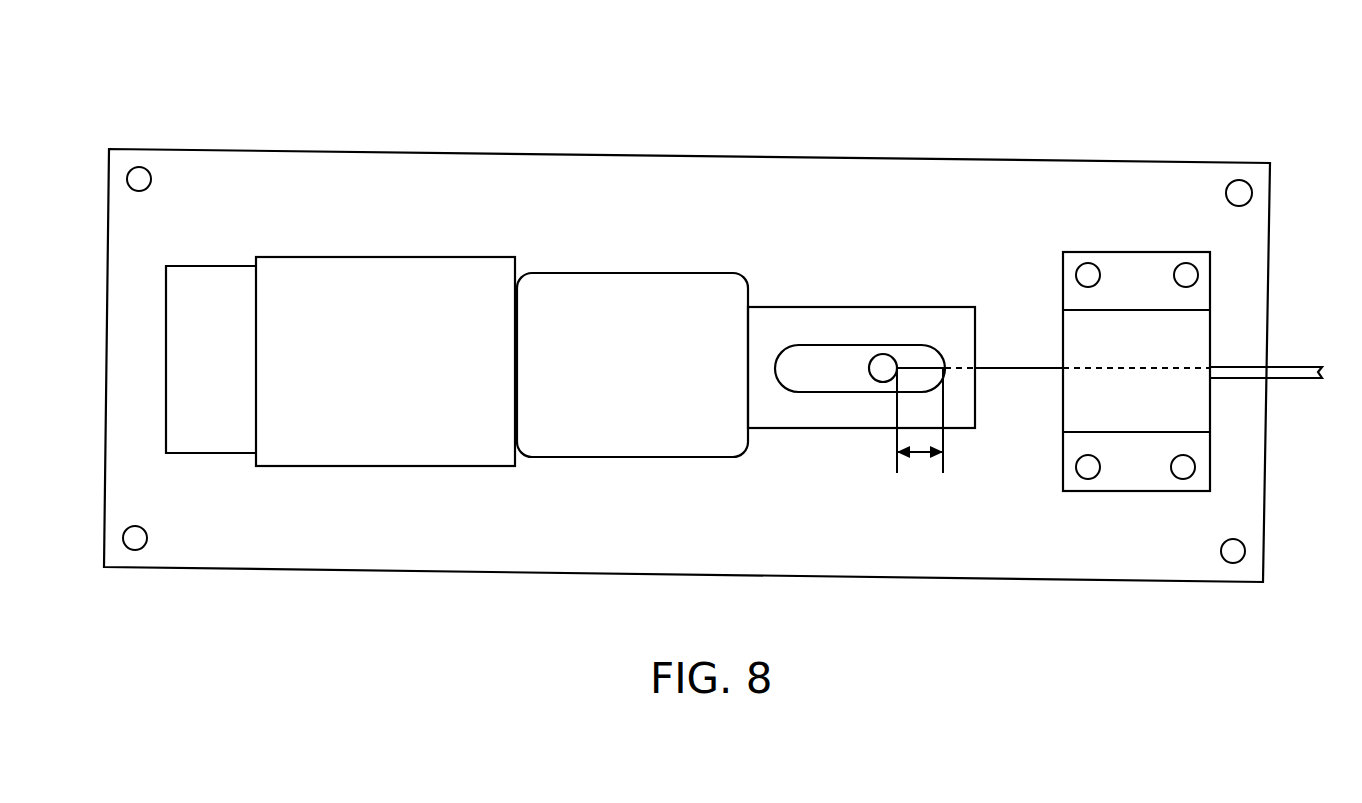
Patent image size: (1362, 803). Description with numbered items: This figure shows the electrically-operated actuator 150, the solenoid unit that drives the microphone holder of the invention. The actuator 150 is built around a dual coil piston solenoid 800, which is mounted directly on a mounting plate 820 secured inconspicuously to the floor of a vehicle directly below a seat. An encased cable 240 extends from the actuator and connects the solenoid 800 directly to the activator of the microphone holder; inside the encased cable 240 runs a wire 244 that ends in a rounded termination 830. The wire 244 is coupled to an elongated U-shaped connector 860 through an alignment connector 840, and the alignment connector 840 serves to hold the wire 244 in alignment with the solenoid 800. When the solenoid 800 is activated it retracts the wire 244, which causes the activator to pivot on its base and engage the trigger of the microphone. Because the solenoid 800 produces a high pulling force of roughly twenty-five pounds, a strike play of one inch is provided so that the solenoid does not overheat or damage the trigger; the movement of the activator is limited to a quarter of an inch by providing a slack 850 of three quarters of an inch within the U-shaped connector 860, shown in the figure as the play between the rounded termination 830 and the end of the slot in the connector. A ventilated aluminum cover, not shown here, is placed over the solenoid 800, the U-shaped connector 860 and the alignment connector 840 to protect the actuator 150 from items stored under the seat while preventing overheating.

The electrically-operated actuator 150 is at (811, 126).
The dual coil piston solenoid 800 is at (633, 457).
The elongated U-shaped connector 860 is at (798, 428).
The mounting plate 820 is at (902, 552).
The rounded termination 830 is at (876, 382).
The slack 850 is at (922, 452).
The wire 244 is at (1018, 368).
The alignment connector 840 is at (1139, 464).
The encased cable 240 is at (1232, 367).